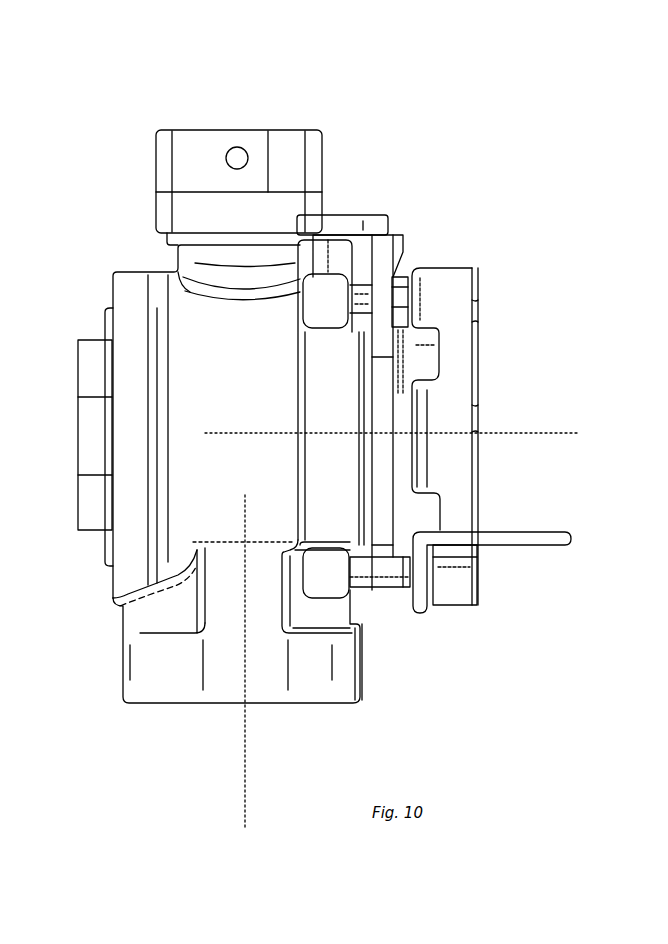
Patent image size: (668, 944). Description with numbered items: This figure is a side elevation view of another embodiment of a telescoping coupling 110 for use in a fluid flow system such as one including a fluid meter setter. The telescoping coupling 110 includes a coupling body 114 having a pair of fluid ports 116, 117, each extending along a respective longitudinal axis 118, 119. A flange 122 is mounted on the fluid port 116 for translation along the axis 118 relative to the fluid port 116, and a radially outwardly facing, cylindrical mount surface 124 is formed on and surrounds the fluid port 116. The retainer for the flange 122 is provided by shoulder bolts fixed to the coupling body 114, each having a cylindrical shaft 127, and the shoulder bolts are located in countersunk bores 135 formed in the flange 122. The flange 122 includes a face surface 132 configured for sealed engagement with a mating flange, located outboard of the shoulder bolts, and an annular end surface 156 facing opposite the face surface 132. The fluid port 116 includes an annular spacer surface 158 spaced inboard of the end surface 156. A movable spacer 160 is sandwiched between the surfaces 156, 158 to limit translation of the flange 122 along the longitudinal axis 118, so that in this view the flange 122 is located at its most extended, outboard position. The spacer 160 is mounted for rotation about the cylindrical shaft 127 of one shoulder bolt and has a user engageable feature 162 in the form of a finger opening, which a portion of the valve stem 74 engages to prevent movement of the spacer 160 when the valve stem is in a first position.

The telescoping coupling 110 is at (416, 156).
The valve stem 74 is at (368, 215).
The coupling body 114 is at (115, 270).
The fluid port 116 is at (373, 592).
The fluid port 117 is at (360, 703).
The longitudinal axis 118 is at (532, 432).
The longitudinal axis 119 is at (246, 788).
The flange 122 is at (472, 270).
The mount surface 124 is at (376, 478).
The cylindrical shaft 127 is at (402, 285).
The face surface 132 is at (480, 336).
The countersunk bore 135 is at (480, 449).
The annular end surface 156 is at (372, 369).
The annular spacer surface 158 is at (378, 402).
The movable spacer 160 is at (378, 285).
The user engageable feature 162 is at (398, 240).